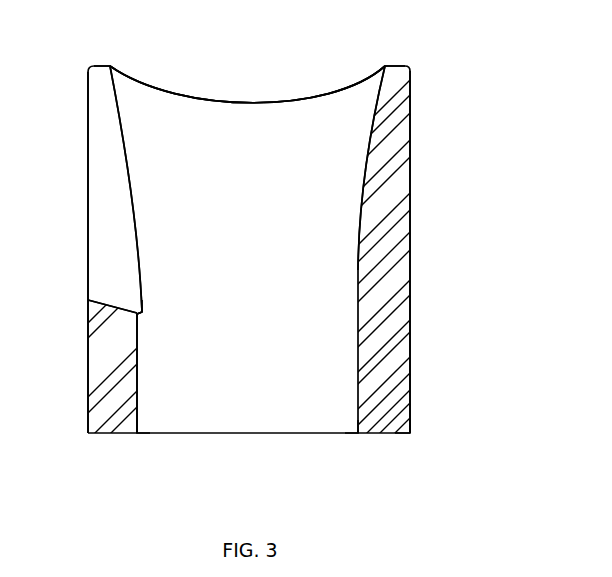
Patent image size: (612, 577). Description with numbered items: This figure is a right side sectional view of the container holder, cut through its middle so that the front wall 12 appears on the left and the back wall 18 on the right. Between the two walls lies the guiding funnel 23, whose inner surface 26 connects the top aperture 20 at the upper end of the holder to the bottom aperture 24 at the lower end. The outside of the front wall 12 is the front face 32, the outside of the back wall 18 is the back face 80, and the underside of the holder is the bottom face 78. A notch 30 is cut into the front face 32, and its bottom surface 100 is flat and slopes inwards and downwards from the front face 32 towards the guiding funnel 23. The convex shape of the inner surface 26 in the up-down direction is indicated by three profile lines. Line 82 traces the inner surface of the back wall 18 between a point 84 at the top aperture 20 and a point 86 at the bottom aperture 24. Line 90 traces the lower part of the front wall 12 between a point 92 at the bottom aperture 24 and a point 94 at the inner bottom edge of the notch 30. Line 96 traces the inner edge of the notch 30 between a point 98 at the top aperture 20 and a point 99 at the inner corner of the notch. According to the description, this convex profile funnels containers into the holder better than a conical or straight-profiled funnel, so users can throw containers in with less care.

The front wall 12 is at (100, 358).
The back wall 18 is at (390, 267).
The top aperture 20 is at (332, 92).
The guiding funnel 23 is at (283, 98).
The bottom aperture 24 is at (277, 435).
The inner surface 26 is at (227, 127).
The notch 30 is at (87, 188).
The front face 32 is at (87, 322).
The bottom face 78 is at (385, 437).
The back face 80 is at (410, 153).
The line 82 is at (365, 190).
The point 84 is at (385, 68).
The point 86 is at (360, 433).
The line 90 is at (138, 323).
The point 92 is at (138, 433).
The point 94 is at (135, 312).
The line 96 is at (128, 167).
The point 98 is at (111, 66).
The point 99 is at (143, 313).
The bottom surface 100 is at (107, 306).